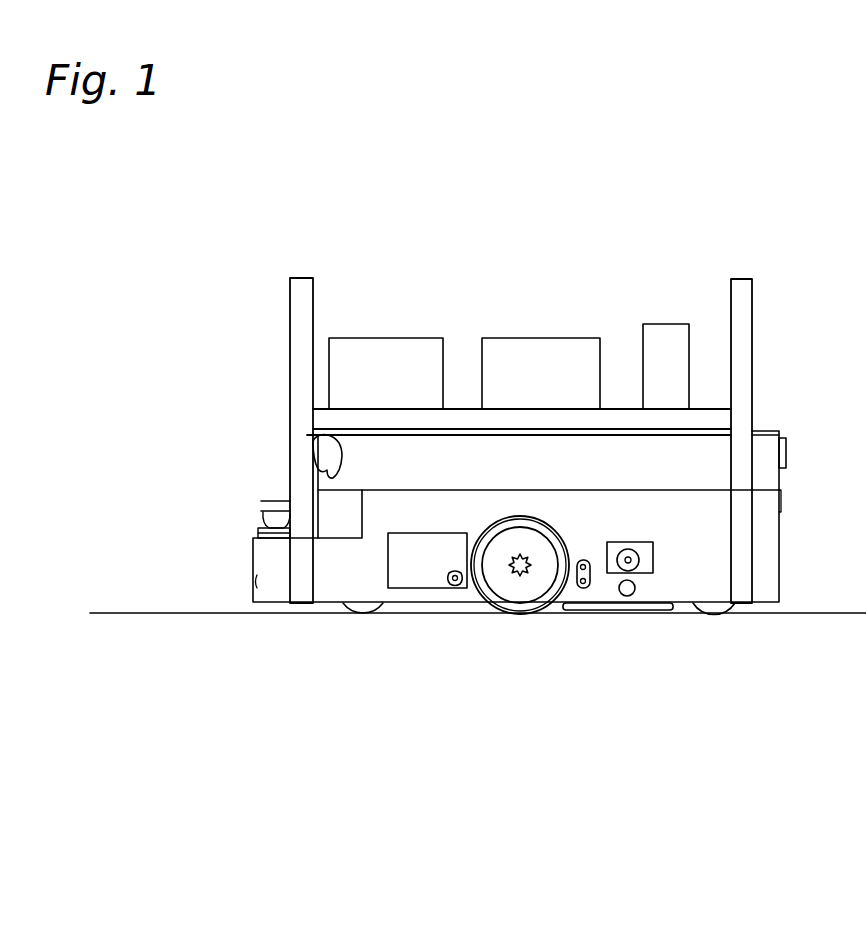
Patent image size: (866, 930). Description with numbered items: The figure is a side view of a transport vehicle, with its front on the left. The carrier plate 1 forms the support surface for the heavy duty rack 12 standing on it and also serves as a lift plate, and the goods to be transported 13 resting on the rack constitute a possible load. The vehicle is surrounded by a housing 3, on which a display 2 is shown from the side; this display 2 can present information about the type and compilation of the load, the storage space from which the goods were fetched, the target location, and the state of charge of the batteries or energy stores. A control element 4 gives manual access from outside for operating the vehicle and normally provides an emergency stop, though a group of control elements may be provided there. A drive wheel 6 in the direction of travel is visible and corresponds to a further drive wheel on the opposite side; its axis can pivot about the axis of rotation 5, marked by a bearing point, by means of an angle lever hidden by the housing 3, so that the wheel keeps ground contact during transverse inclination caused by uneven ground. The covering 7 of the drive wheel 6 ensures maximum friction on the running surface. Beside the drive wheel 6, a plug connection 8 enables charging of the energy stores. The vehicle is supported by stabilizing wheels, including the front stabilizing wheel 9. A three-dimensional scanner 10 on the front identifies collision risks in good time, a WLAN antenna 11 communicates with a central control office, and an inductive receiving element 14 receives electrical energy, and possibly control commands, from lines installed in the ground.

The carrier plate 1 is at (762, 428).
The display 2 is at (787, 450).
The housing 3 is at (762, 533).
The control element 4 is at (627, 580).
The axis of rotation 5 is at (574, 589).
The drive wheel 6 is at (513, 611).
The covering of the drive wheel 7 is at (522, 597).
The plug connection 8 is at (450, 583).
The front stabilizing wheel 9 is at (345, 612).
The 3D scanner 10 is at (270, 508).
The WLAN antenna 11 is at (323, 453).
The heavy duty rack 12 is at (297, 322).
The goods to be transported 13 is at (677, 332).
The inductive receiving element 14 is at (659, 610).